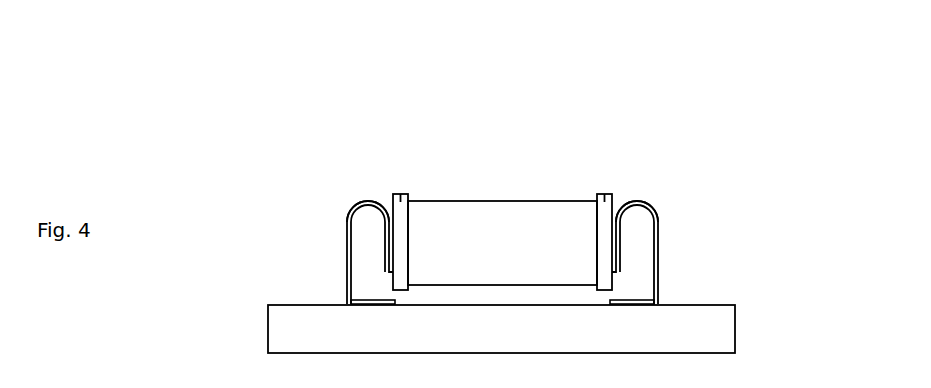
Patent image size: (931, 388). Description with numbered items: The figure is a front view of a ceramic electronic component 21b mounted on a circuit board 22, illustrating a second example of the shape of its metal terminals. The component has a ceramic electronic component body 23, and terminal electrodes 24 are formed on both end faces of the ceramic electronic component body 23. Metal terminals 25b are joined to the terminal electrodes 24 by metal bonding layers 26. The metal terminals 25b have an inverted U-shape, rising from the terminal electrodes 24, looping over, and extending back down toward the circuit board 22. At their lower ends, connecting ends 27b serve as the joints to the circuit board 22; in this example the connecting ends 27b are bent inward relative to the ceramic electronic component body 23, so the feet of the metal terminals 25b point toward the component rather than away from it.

The ceramic electronic component 21b is at (295, 123).
The circuit board 22 is at (725, 337).
The ceramic electronic component body 23 is at (503, 202).
The terminal electrodes 24 is at (402, 194).
The metal terminals 25b is at (491, 216).
The metal bonding layers 26 is at (385, 203).
The connecting ends 27b is at (372, 301).